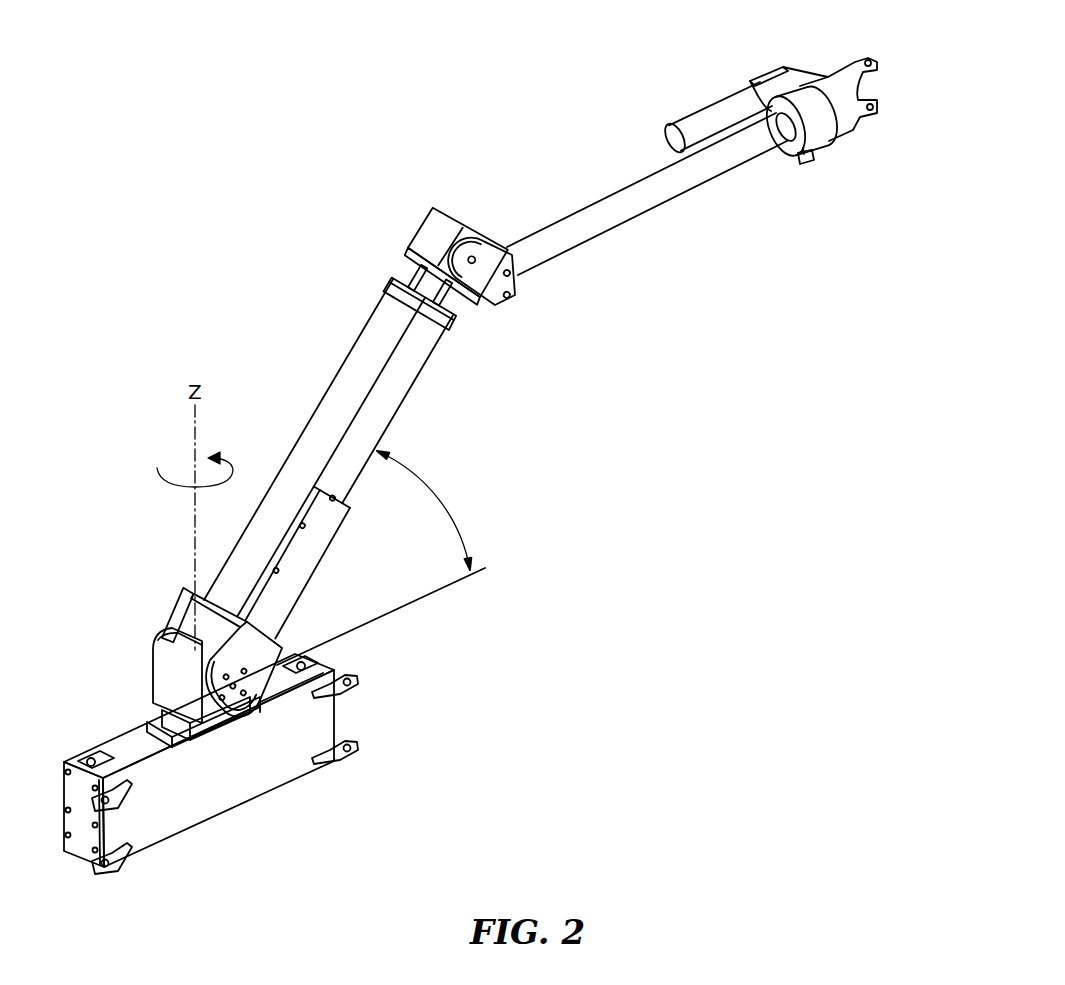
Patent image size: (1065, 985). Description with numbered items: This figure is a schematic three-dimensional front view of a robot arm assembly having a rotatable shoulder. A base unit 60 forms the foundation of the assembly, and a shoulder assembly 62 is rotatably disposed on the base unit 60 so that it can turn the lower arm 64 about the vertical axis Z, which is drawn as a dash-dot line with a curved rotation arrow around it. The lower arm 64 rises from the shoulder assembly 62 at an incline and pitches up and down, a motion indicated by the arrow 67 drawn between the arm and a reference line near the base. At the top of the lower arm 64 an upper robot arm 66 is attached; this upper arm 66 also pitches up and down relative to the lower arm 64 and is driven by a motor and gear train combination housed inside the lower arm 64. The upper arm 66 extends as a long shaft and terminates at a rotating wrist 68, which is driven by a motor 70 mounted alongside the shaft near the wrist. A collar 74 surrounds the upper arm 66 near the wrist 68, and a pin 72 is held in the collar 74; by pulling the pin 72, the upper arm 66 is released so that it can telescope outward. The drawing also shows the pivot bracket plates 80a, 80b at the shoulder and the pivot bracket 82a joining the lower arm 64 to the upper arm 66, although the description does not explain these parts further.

The base unit 60 is at (320, 727).
The shoulder assembly 62 is at (170, 676).
The lower arm 64 is at (342, 385).
The upper robot arm 66 is at (612, 215).
The arrow 67 is at (442, 486).
The rotating wrist 68 is at (845, 72).
The motor 70 is at (702, 113).
The pin 72 is at (805, 166).
The collar 74 is at (825, 134).
The yoke plate 80a is at (257, 648).
The yoke plate 80b is at (172, 614).
The bracket 82a is at (487, 283).